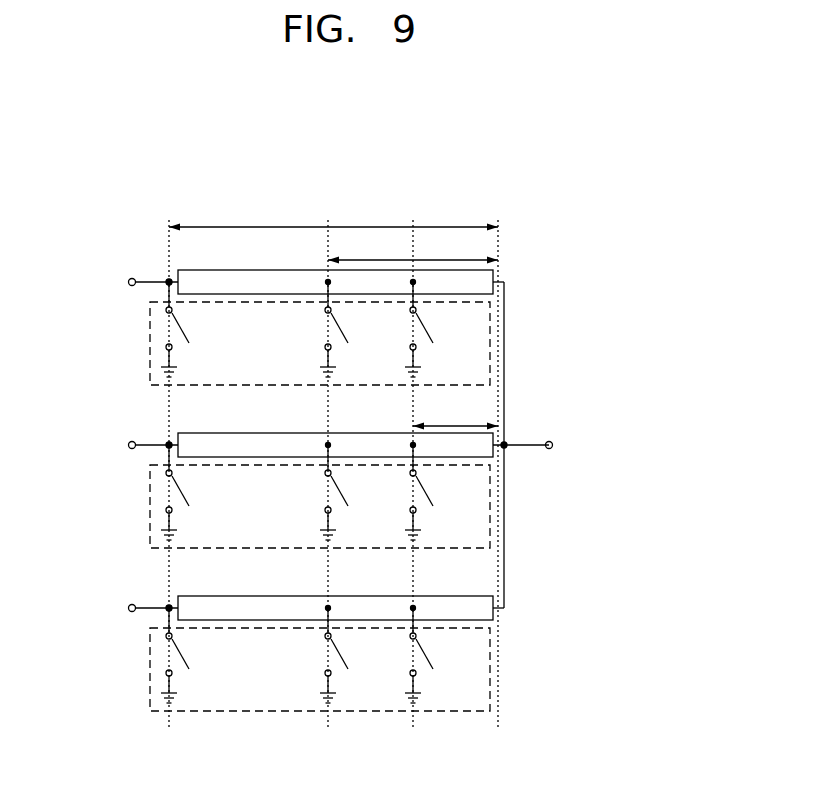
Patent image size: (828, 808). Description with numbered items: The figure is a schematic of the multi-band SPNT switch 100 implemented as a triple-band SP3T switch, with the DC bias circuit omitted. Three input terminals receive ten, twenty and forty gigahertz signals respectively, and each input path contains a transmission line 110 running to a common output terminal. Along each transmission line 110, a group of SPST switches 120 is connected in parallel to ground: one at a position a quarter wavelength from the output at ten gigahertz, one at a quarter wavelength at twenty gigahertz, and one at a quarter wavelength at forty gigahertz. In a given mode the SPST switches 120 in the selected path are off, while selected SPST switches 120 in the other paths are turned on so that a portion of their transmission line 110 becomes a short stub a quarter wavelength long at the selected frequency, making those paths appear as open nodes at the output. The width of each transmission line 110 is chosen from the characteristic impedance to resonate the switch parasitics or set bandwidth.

The multi-band SPNT switch 100 is at (147, 179).
The transmission line 110 is at (197, 270).
The SPST switch 120 is at (150, 343).